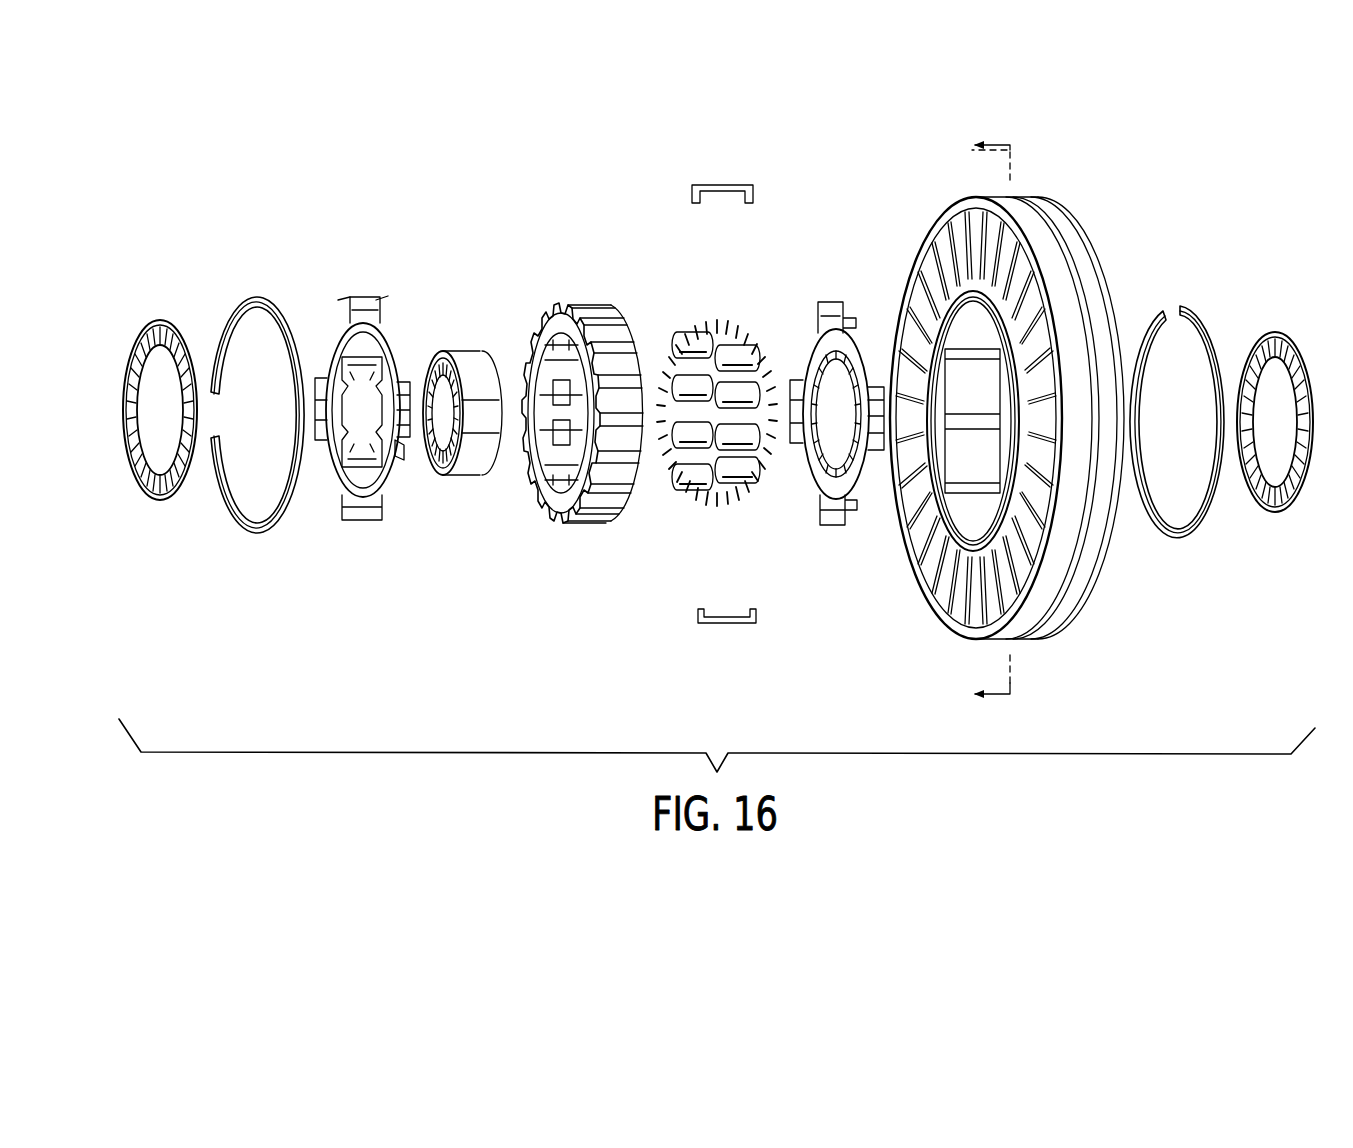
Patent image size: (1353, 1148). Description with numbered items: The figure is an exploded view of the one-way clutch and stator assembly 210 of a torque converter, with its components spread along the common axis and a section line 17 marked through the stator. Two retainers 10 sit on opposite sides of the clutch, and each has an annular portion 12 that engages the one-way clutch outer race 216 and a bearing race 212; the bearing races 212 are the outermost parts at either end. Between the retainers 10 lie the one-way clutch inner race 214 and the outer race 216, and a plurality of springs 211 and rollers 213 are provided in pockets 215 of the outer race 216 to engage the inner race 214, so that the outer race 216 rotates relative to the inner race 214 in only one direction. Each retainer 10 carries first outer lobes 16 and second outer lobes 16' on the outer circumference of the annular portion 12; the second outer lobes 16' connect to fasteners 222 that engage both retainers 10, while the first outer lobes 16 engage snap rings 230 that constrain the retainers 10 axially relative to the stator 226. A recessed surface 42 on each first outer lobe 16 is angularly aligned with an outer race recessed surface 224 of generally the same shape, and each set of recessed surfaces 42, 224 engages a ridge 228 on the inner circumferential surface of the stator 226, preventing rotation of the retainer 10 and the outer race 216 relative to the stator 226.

The retainer 10 is at (366, 300).
The annular portion 12 is at (375, 337).
The first outer lobe 16 is at (414, 385).
The second outer lobe 16' is at (592, 411).
The section line 17- 17 is at (992, 421).
The recessed surface 42 is at (404, 425).
The one-way clutch and stator assembly 210 is at (393, 618).
The spring 211 is at (725, 340).
The bearing race 212 is at (150, 502).
The roller 213 is at (702, 332).
The one-way clutch inner race 214 is at (436, 483).
The pocket 215 is at (556, 333).
The one-way clutch outer race 216 is at (584, 535).
The fastener 222 is at (720, 185).
The outer race recessed surface 224 is at (530, 347).
The stator 226 is at (915, 252).
The ridge 228 is at (977, 412).
The snap ring 230 is at (237, 520).